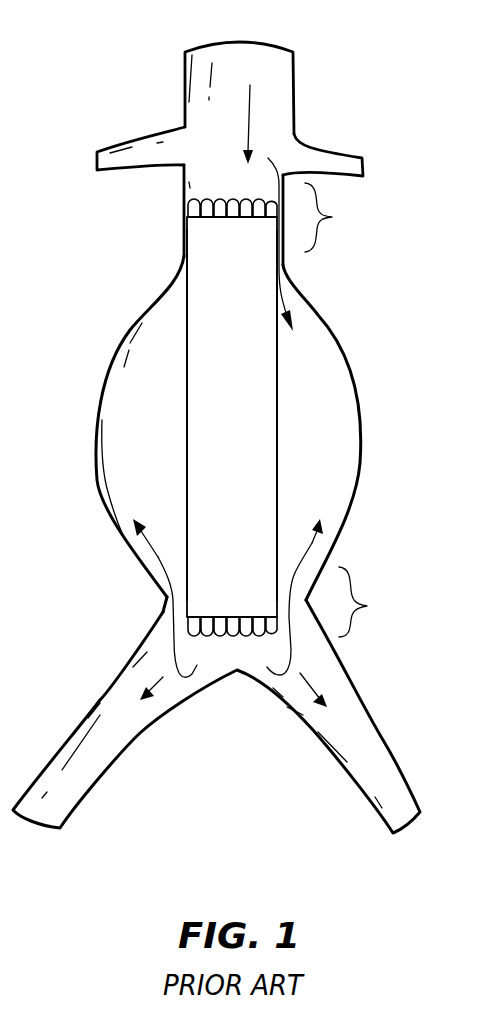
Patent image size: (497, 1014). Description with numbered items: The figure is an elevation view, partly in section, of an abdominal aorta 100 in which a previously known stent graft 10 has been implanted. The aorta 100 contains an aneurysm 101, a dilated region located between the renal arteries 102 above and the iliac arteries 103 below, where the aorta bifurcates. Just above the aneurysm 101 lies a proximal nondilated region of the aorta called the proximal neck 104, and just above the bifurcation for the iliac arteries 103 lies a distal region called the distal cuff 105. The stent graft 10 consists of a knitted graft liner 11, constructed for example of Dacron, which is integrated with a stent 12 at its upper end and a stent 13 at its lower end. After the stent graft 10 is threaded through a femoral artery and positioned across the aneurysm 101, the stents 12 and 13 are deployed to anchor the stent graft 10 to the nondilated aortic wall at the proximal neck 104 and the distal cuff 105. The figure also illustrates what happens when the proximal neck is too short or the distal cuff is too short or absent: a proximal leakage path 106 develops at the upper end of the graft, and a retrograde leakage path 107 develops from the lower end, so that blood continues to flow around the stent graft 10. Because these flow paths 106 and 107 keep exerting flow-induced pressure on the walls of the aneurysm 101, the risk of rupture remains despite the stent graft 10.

The stent graft 10 is at (170, 429).
The knitted graft liner 11 is at (186, 370).
The stent 12 is at (184, 204).
The stent 13 is at (217, 618).
The aorta 100 is at (293, 60).
The aneurysm 101 is at (337, 423).
The renal arteries 102 is at (110, 149).
The iliac arteries 103 is at (70, 730).
The proximal neck 104 is at (285, 215).
The distal cuff 105 is at (291, 602).
The proximal leakage path 106 is at (287, 305).
The retrograde leakage path 107 is at (153, 560).